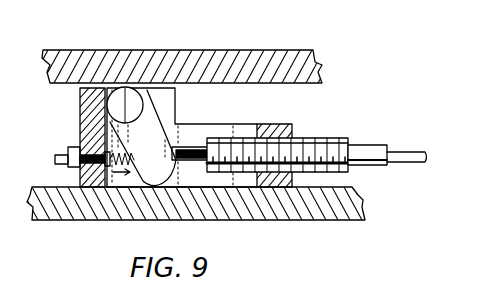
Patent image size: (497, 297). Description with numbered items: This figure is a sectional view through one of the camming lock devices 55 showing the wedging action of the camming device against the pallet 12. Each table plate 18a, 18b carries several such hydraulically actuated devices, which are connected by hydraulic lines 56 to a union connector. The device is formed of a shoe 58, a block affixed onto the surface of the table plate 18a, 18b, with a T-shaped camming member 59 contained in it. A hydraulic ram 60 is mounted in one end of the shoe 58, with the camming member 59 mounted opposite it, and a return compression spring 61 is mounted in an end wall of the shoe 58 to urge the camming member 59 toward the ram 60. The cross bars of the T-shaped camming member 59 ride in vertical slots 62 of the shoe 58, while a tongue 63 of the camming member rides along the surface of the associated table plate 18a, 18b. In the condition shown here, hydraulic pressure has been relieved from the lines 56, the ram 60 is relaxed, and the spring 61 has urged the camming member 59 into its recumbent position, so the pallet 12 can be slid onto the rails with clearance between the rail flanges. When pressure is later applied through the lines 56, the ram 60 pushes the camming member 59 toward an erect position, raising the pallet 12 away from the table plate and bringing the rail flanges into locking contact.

The pallet 12 is at (255, 50).
The table plate 18a is at (223, 223).
The table plate 18b is at (315, 213).
The camming lock device 55 is at (312, 112).
The hydraulic line 56 is at (408, 153).
The shoe 58 is at (223, 122).
The T-shaped camming member 59 is at (147, 123).
The hydraulic ram 60 is at (328, 138).
The return compression spring 61 is at (105, 152).
The vertical slot 62 is at (107, 101).
The tongue 63 is at (157, 135).